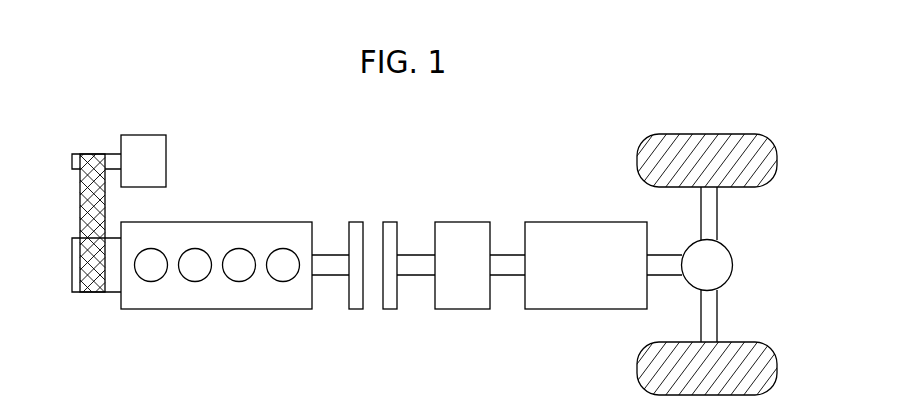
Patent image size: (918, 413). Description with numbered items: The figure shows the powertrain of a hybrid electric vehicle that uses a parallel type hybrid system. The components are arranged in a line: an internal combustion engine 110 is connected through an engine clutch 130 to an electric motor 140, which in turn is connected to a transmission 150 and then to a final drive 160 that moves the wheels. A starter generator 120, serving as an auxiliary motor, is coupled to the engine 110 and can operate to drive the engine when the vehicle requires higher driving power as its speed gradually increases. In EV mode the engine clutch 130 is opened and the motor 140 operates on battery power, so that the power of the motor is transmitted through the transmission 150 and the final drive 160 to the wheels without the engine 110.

The internal combustion engine 110 is at (280, 221).
The starter generator 120 is at (133, 135).
The engine clutch 130 is at (392, 222).
The electric motor 140 is at (457, 222).
The transmission 150 is at (616, 222).
The final drive 160 is at (732, 248).